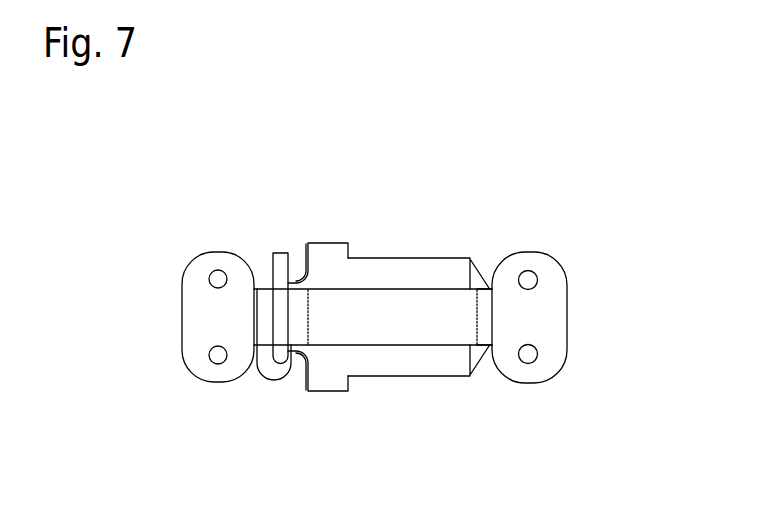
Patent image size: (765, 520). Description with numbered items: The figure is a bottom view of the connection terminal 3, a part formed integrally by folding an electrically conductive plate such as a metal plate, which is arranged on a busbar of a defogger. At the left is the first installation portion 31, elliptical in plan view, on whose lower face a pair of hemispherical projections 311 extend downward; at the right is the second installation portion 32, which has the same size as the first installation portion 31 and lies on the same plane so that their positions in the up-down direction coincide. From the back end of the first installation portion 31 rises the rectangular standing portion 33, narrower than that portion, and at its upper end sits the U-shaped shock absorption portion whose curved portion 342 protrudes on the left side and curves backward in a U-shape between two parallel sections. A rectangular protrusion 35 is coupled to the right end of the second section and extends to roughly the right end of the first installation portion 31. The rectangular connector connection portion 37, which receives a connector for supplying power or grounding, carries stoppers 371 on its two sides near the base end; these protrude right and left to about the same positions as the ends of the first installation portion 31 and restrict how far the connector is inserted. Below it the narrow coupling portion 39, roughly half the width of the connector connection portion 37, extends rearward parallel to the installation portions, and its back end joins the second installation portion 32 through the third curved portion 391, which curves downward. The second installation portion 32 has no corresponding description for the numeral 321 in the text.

The connection terminal 3 is at (345, 192).
The first installation portion 31 is at (199, 320).
The hemispherical projections 311 is at (209, 278).
The second installation portion 32 is at (555, 308).
The through hole 321 is at (529, 355).
The standing portion 33 is at (259, 323).
The curved portion 342 is at (270, 380).
The protrusion 35 is at (280, 252).
The connector connection portion 37 is at (415, 278).
The stoppers 371 is at (328, 243).
The coupling portion 39 is at (400, 328).
The third curved portion 391 is at (485, 320).